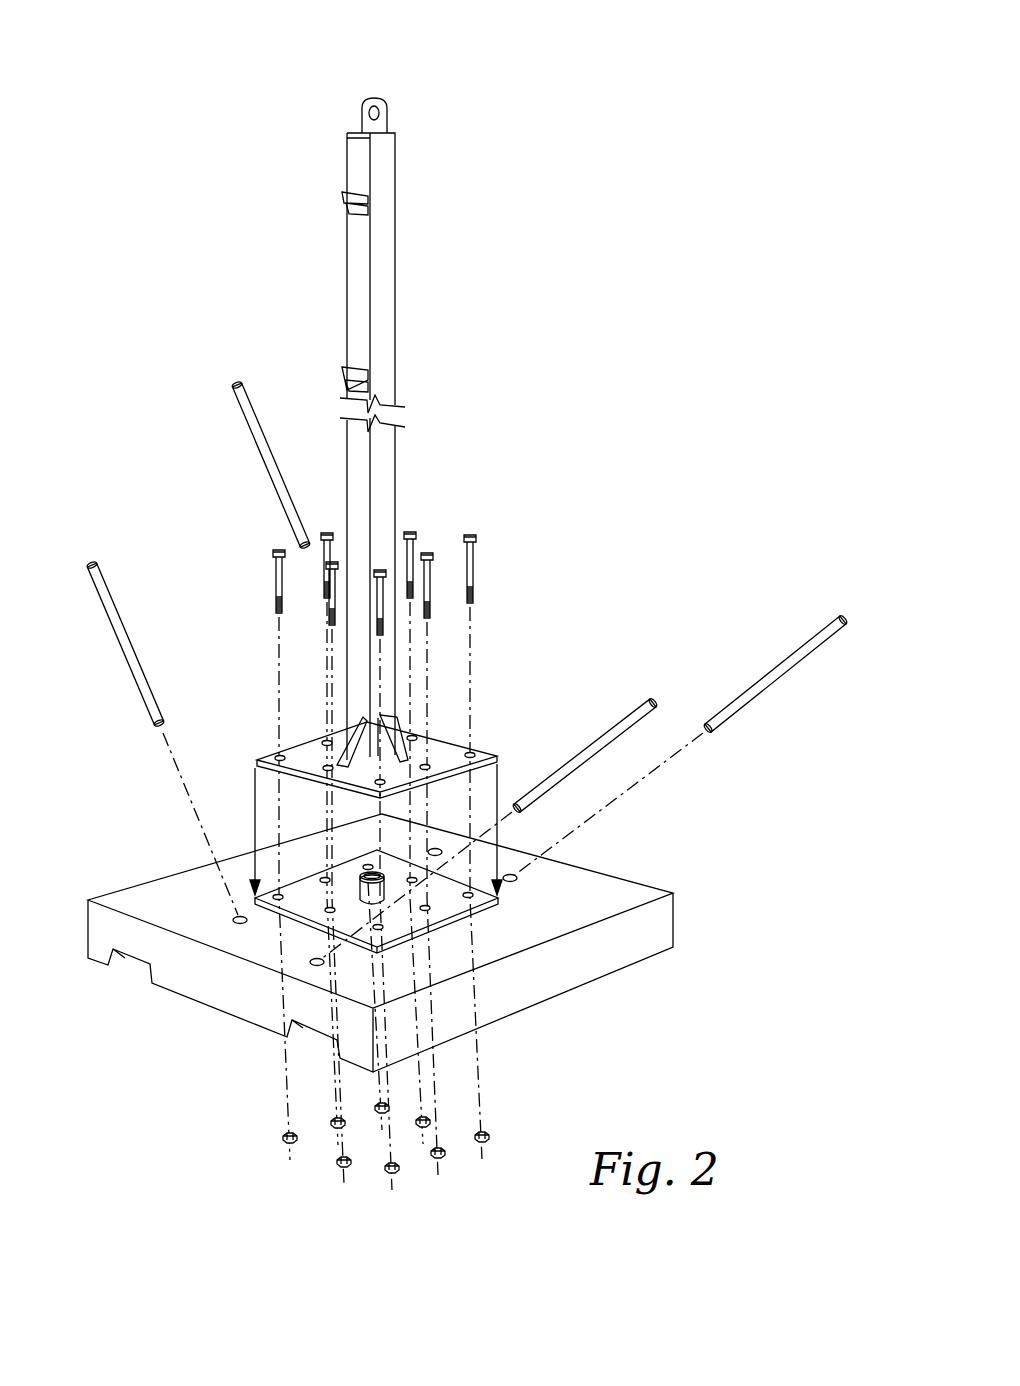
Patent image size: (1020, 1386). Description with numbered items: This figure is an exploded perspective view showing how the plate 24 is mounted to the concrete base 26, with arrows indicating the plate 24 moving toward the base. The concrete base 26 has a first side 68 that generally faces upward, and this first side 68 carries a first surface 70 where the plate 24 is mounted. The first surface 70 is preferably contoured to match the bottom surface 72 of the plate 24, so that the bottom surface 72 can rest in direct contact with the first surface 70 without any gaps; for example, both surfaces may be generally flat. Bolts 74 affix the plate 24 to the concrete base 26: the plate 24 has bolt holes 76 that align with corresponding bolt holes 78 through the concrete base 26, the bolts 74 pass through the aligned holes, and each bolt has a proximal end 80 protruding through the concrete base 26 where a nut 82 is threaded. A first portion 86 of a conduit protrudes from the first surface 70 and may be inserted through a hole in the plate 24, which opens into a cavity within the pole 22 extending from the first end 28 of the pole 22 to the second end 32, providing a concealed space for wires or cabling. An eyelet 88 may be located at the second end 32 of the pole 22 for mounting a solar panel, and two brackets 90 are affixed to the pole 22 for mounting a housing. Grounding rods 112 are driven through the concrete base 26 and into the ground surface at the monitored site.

The pole 22 is at (386, 312).
The plate 24 is at (440, 752).
The concrete base 26 is at (628, 894).
The first end 28 is at (406, 718).
The second end 32 is at (405, 127).
The first side 68 is at (566, 889).
The first surface 70 is at (425, 905).
The bottom surface 72 is at (318, 789).
The bolts 74 is at (466, 538).
The bolt holes 76 is at (325, 743).
The bolt holes 78 is at (425, 912).
The proximal end 80 is at (483, 600).
The nut 82 is at (340, 1163).
The first portion 86 is at (366, 893).
The eyelet 88 is at (360, 105).
The brackets 90 is at (352, 192).
The grounding rods 112 is at (262, 440).